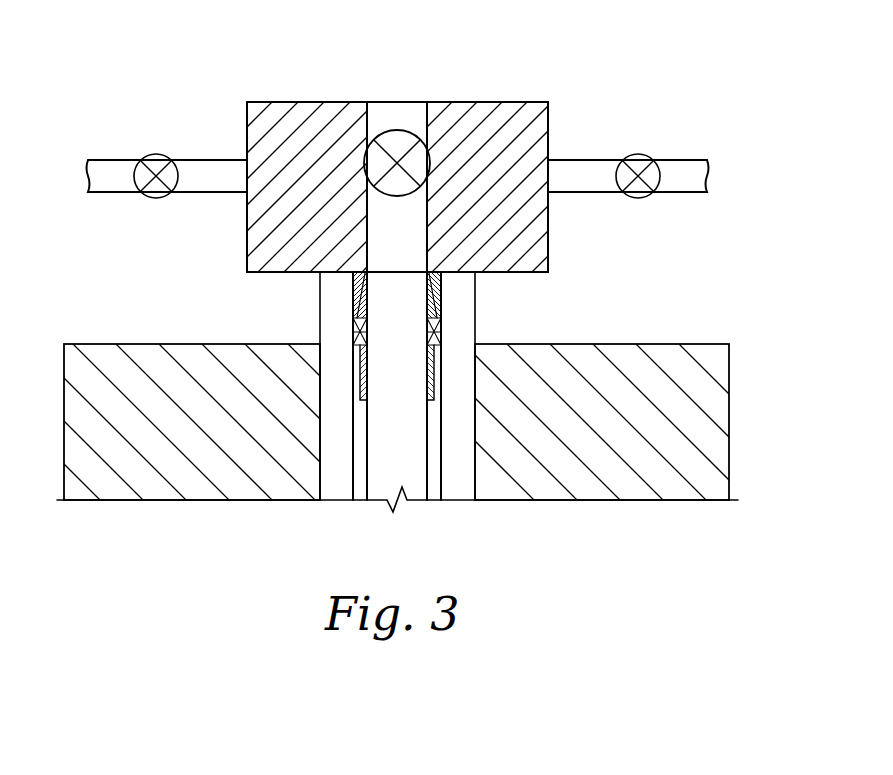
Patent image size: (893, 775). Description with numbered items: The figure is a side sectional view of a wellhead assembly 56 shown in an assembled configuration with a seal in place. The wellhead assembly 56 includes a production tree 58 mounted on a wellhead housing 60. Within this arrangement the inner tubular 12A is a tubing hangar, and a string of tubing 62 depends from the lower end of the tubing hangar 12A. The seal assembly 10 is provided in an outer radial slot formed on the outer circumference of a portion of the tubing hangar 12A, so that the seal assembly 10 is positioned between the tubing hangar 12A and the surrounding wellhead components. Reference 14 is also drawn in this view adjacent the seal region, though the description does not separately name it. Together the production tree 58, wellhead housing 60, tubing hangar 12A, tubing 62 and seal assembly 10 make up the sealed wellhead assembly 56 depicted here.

The wellhead assembly 56 is at (398, 137).
The production tree 58 is at (305, 102).
The wellhead housing 60 is at (476, 291).
The string of tubing 62 is at (368, 423).
The seal assembly 10 is at (393, 327).
The inner tubular 12A is at (355, 330).
The ferrule sleeve section 14 is at (442, 346).